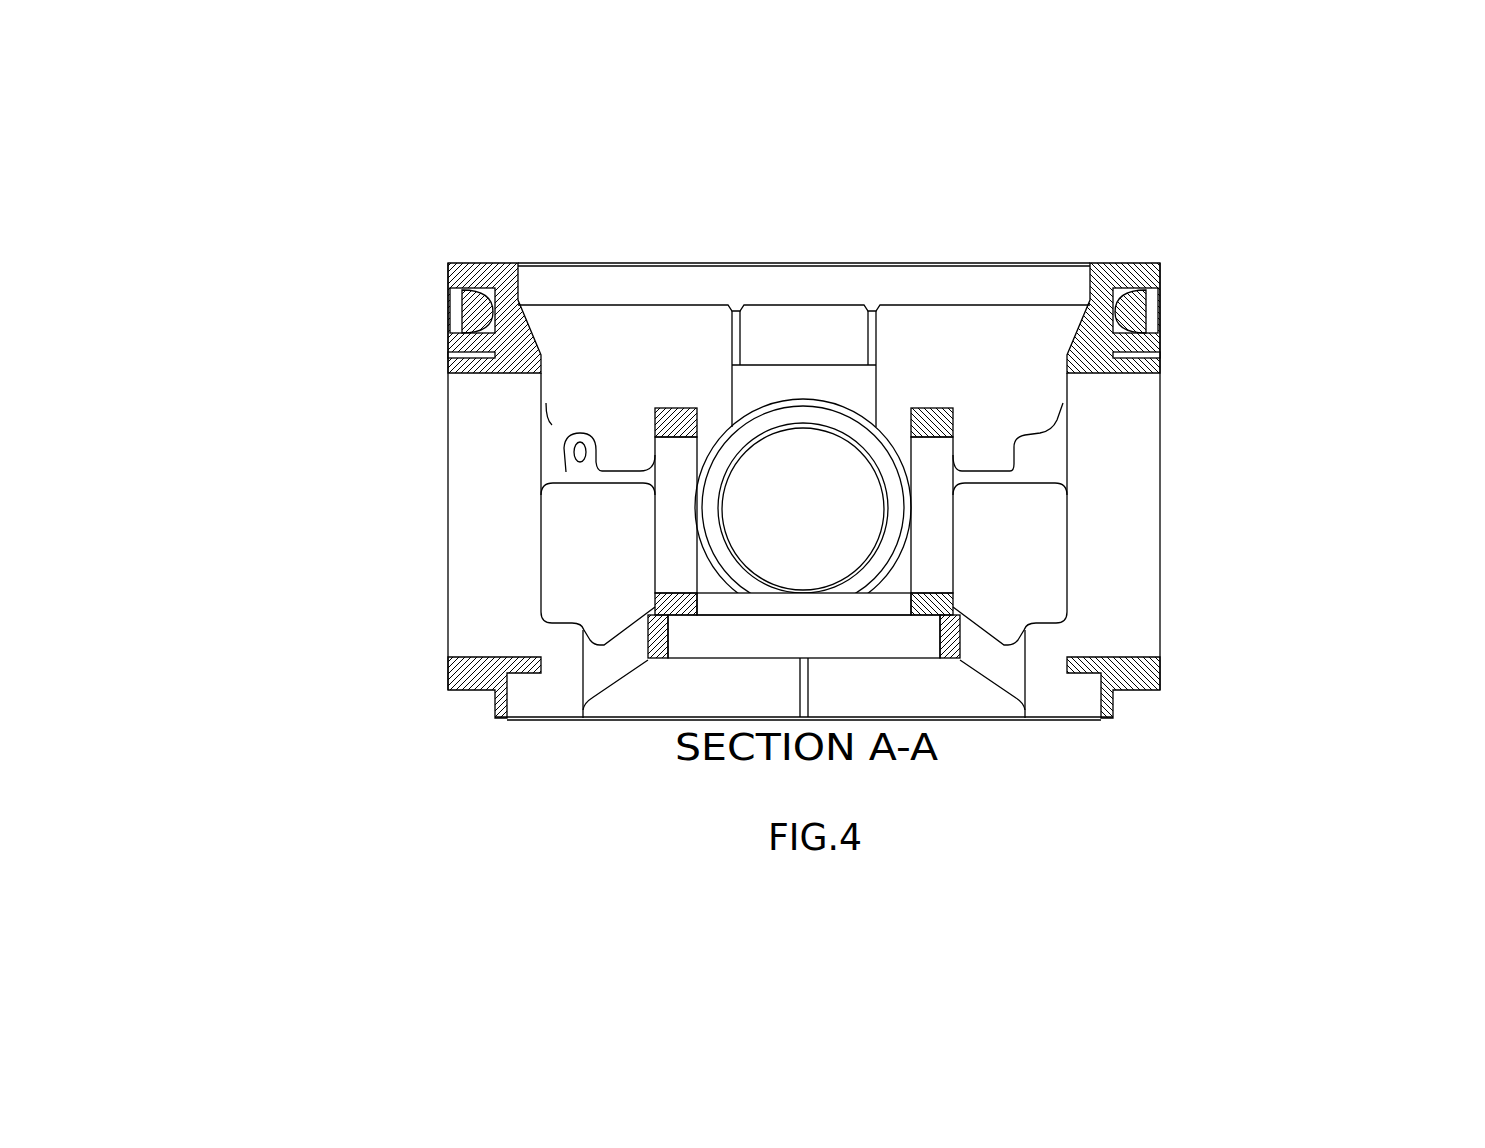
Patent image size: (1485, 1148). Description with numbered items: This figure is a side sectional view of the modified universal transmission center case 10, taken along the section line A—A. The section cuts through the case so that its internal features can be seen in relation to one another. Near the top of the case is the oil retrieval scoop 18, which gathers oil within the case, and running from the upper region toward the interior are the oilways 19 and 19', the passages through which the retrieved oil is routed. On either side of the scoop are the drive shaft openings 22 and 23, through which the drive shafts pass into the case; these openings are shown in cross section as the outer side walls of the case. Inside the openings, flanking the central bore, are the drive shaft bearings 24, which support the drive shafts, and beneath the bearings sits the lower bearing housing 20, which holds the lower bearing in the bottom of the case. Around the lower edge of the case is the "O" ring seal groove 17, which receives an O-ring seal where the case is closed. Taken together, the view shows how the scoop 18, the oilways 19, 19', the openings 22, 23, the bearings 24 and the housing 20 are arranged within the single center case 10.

The transmission center case 10 is at (800, 501).
The "O" ring seal groove 17 is at (495, 707).
The oil retrieval scoop 18 is at (808, 383).
The oilway 19 is at (471, 350).
The oilway 19' is at (1176, 355).
The lower bearing housing 20 is at (893, 644).
The drive shaft opening 22 is at (1115, 560).
The drive shaft opening 23 is at (490, 459).
The drive shaft bearing 24 is at (670, 513).